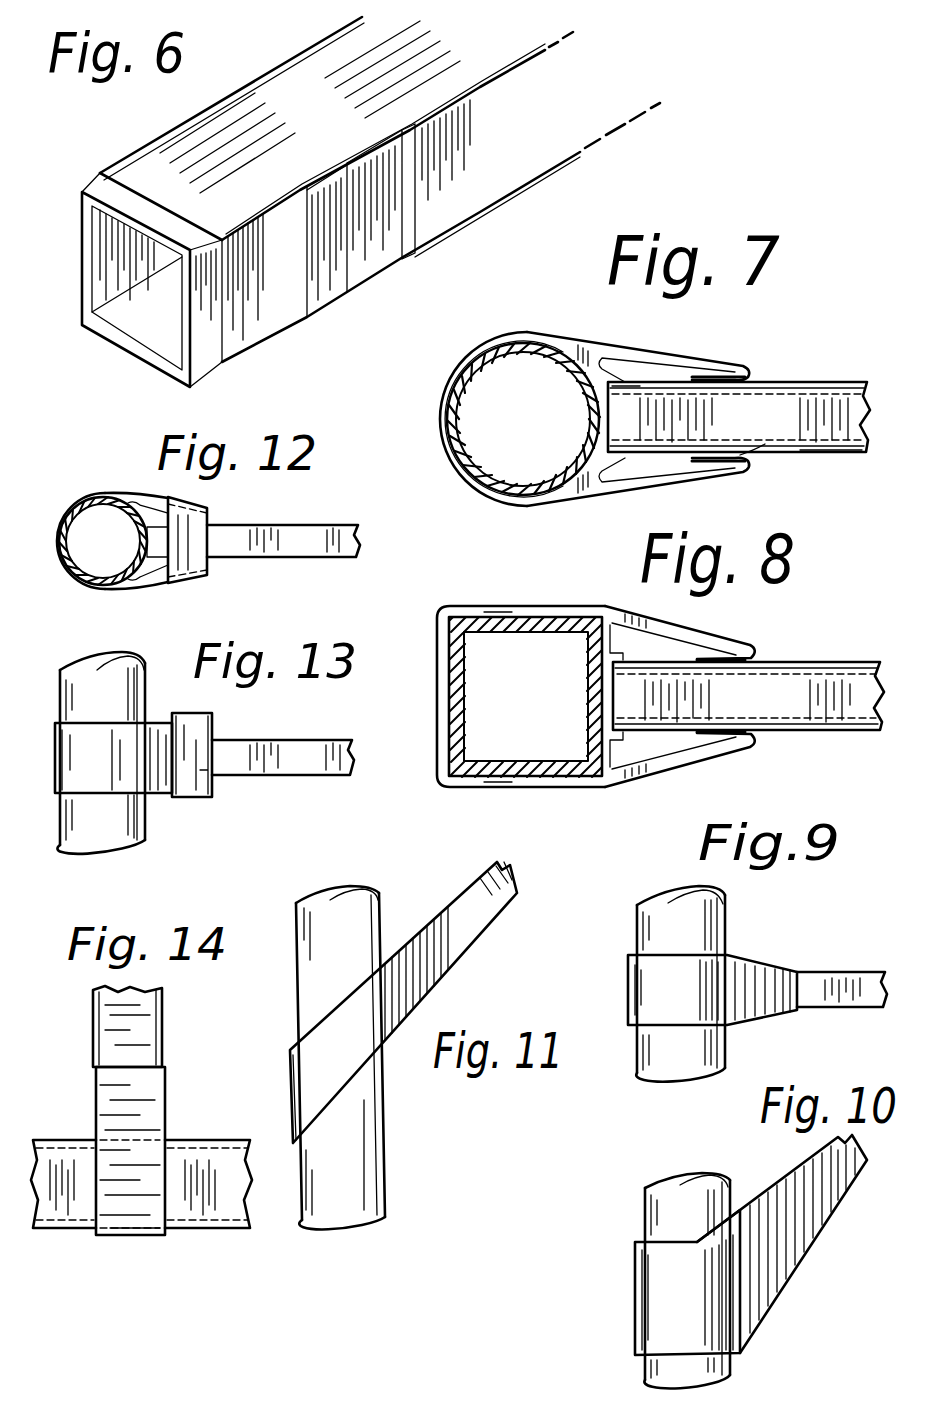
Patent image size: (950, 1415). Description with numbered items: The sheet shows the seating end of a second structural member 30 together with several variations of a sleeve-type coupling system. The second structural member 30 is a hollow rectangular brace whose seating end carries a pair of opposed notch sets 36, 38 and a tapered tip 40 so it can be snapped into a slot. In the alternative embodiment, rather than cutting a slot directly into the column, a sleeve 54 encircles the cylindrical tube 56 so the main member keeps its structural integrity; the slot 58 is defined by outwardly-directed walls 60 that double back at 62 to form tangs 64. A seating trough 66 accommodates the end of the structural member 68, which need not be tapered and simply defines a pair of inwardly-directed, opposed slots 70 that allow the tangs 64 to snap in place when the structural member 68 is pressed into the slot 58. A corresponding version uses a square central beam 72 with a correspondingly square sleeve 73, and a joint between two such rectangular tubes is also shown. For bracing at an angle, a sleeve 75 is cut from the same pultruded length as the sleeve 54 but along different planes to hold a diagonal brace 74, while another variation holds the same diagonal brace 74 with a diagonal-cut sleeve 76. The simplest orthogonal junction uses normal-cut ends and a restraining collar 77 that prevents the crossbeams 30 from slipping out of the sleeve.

In FIG. 6, the second structural member 30 is at (502, 151).
In FIG. 12, the second structural member 30 is at (330, 527).
In FIG. 13, the second structural member 30 is at (297, 740).
In FIG. 6, the notch set 36 is at (190, 127).
In FIG. 6, the notch set 38 is at (294, 59).
In FIG. 6, the tapered tip 40 is at (205, 360).
In FIG. 7, the sleeve 54 is at (572, 333).
In FIG. 9, the sleeve 54 is at (670, 947).
In FIG. 7, the cylindrical tube 56 is at (470, 353).
In FIG. 9, the cylindrical tube 56 is at (637, 905).
In FIG. 10, the cylindrical tube 56 is at (645, 1207).
In FIG. 7, the slot 58 is at (728, 412).
In FIG. 7, the outwardly-directed walls 60 is at (628, 491).
In FIG. 7, the doubled-back portion 62 is at (755, 452).
In FIG. 7, the tangs 64 is at (710, 458).
In FIG. 7, the seating trough 66 is at (618, 397).
In FIG. 7, the structural member 68 is at (837, 452).
In FIG. 9, the structural member 68 is at (850, 972).
In FIG. 7, the opposed slots 70 is at (699, 378).
In FIG. 8, the central beam 72 is at (468, 620).
In FIG. 14, the central beam 72 is at (210, 1140).
In FIG. 8, the sleeve 73 is at (560, 603).
In FIG. 14, the sleeve 73 is at (102, 1237).
In FIG. 11, the diagonal brace 74 is at (483, 927).
In FIG. 10, the diagonal brace 74 is at (837, 1197).
In FIG. 10, the sleeve 75 is at (635, 1283).
In FIG. 11, the diagonal-cut sleeve 76 is at (330, 1007).
In FIG. 12, the restraining collar 77 is at (195, 578).
In FIG. 13, the restraining collar 77 is at (193, 797).